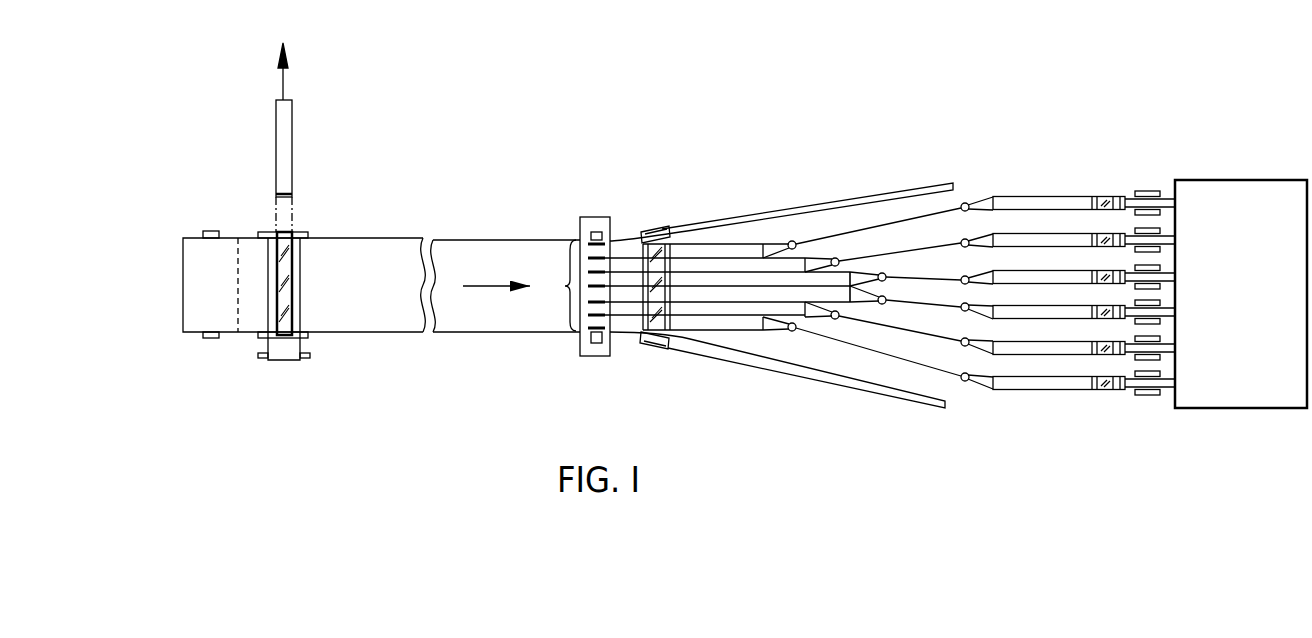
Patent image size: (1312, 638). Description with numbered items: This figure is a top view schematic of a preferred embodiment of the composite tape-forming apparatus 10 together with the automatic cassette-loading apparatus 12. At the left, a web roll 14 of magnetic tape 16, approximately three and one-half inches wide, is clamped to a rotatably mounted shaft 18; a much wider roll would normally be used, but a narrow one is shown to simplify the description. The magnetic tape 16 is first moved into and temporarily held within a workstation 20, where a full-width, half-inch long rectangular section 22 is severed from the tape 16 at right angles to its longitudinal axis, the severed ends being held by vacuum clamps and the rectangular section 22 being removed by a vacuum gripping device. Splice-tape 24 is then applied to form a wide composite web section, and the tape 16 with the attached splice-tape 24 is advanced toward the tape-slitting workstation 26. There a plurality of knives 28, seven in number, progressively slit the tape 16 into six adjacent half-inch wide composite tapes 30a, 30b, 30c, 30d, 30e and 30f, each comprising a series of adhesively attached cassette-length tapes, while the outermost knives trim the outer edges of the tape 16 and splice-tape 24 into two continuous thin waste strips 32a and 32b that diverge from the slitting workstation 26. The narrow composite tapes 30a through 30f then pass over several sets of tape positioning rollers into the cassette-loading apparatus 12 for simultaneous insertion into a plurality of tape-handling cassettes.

The composite tape-forming apparatus 10 is at (749, 147).
The automatic cassette-loading apparatus 12 is at (1228, 185).
The web roll 14 is at (190, 232).
The magnetic tape 16 is at (250, 324).
The rotatably mounted shaft 18 is at (211, 231).
The workstation 20 is at (305, 230).
The rectangular section 22 is at (293, 112).
The splice-tape 24 is at (301, 303).
The tape-slitting workstation 26 is at (617, 212).
The plurality of knives 28 is at (519, 285).
The composite tape 30a is at (770, 337).
The composite tape 30b is at (810, 322).
The composite tape 30c is at (856, 307).
The composite tape 30d is at (862, 272).
The composite tape 30e is at (823, 258).
The composite tape 30f is at (763, 242).
The waste strip 32a is at (822, 204).
The waste strip 32b is at (723, 356).